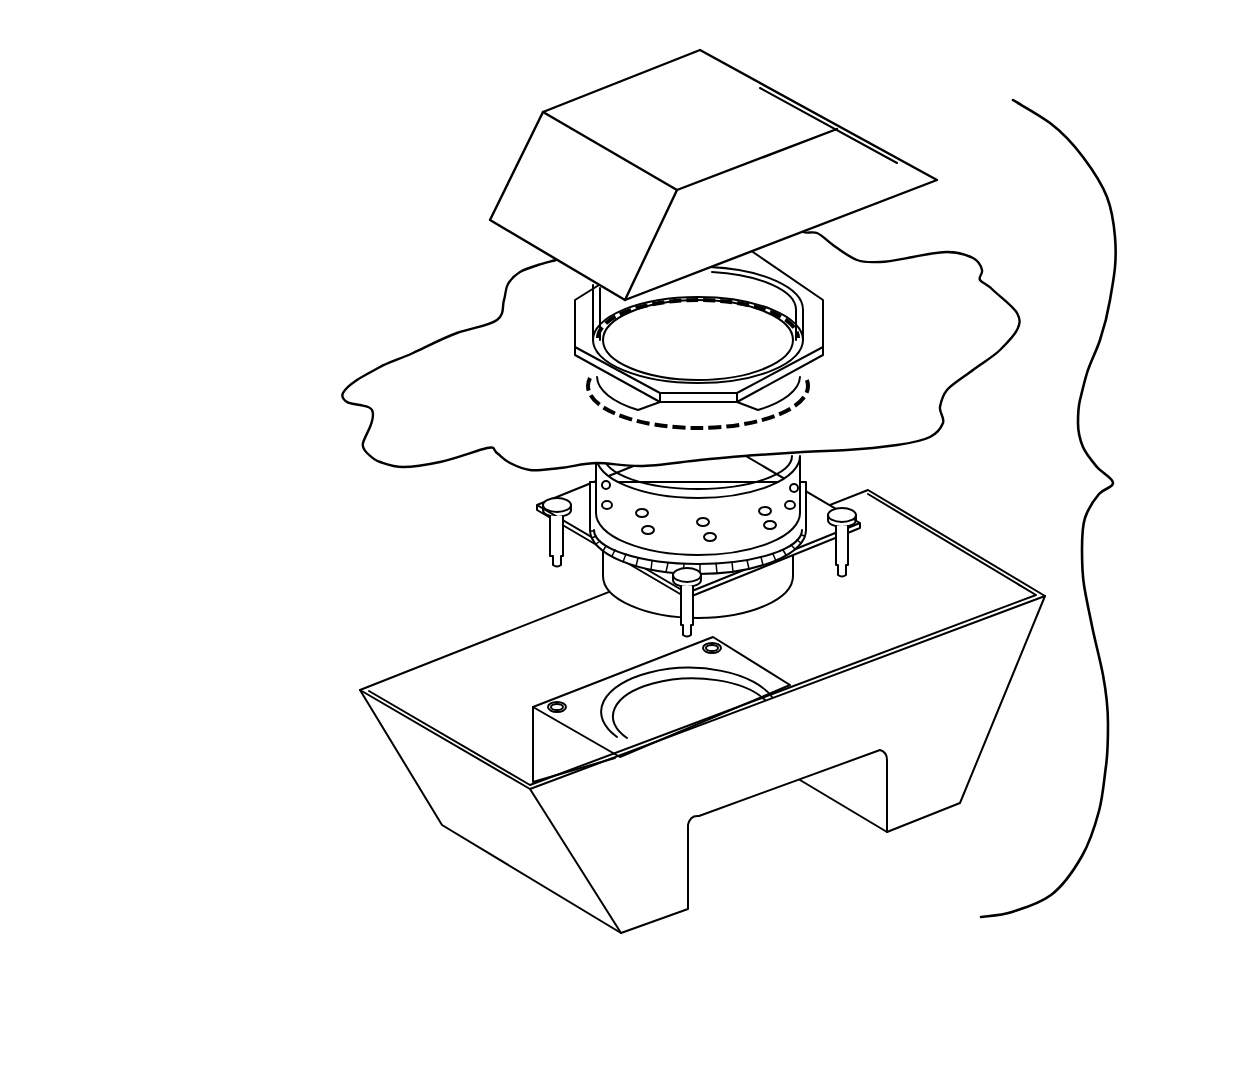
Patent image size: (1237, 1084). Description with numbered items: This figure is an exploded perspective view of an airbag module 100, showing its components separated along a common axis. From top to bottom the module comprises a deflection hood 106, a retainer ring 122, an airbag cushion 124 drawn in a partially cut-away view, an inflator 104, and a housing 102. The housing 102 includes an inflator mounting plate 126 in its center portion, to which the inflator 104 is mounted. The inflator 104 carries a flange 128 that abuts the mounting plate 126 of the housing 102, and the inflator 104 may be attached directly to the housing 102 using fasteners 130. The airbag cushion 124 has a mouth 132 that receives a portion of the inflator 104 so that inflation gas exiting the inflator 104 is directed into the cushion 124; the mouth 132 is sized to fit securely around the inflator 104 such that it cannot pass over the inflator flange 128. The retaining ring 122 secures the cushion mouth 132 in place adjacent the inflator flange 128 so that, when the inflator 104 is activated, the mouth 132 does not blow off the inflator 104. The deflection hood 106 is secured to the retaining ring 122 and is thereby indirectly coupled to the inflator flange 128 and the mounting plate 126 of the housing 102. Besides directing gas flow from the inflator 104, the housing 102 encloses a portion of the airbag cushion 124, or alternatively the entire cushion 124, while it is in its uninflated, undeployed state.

The airbag module 100 is at (258, 316).
The housing 102 is at (408, 775).
The inflator 104 is at (812, 467).
The deflection hood 106 is at (747, 113).
The retainer ring 122 is at (603, 292).
The airbag cushion 124 is at (920, 273).
The inflator mounting plate 126 is at (592, 698).
The flange 128 is at (548, 522).
The fasteners 130 is at (847, 548).
The mouth 132 is at (587, 378).